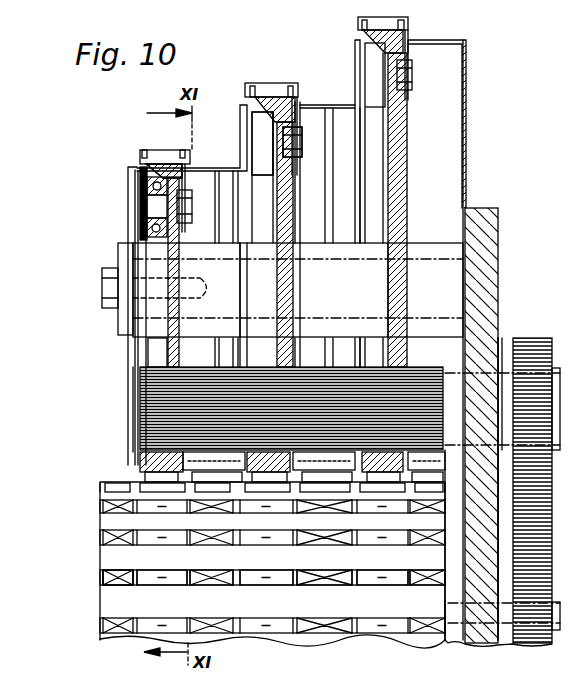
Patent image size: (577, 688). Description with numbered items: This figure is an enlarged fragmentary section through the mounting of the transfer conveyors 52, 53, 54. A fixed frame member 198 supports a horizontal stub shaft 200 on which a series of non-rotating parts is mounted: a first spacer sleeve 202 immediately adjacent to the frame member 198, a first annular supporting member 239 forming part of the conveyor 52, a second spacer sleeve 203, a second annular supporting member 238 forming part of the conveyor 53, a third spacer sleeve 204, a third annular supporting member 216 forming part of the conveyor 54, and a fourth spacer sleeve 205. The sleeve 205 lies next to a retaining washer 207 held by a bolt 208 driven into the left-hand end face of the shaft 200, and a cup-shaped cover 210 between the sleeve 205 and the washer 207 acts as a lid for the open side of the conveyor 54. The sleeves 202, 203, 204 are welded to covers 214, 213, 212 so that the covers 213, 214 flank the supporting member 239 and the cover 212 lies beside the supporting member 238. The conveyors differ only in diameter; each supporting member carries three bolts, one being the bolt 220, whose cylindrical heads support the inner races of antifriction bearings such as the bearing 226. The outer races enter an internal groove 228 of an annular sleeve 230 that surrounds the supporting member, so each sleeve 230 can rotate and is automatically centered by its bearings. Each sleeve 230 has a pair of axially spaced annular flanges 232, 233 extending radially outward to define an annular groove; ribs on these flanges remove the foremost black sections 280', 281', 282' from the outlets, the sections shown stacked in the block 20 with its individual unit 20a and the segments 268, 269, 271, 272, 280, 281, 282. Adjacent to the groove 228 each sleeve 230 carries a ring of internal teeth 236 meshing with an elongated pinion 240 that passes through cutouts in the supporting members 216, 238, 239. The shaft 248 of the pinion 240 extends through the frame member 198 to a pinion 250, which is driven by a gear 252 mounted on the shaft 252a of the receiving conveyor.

The stack of coil assemblies 20 is at (107, 523).
The coil unit 20a is at (102, 578).
The transfer conveyor 52 is at (350, 40).
The transfer conveyor 53 is at (312, 70).
The transfer conveyor 54 is at (216, 152).
The fixed frame member 198 is at (490, 256).
The horizontal stub shaft 200 is at (400, 285).
The first spacer sleeve 202 is at (443, 325).
The second spacer sleeve 203 is at (350, 316).
The third spacer sleeve 204 is at (246, 316).
The fourth spacer sleeve 205 is at (165, 324).
The retaining washer 207 is at (123, 252).
The bolt 208 is at (103, 289).
The cup-shaped cover 210 is at (130, 181).
The cover 212 is at (236, 200).
The cover 213 is at (306, 106).
The cover 214 is at (467, 166).
The third annular supporting member 216 is at (152, 355).
The bolt 220 is at (157, 208).
The antifriction bearing 226 is at (145, 232).
The internal groove 228 is at (135, 453).
The annular sleeve 230 is at (404, 36).
The annular flange 232 is at (152, 142).
The annular flange 233 is at (177, 143).
The internal teeth 236 is at (404, 54).
The second annular supporting member 238 is at (297, 186).
The first annular supporting member 239 is at (408, 123).
The elongated pinion 240 is at (148, 414).
The shaft 248 is at (503, 380).
The pinion 250 is at (555, 340).
The gear 252 is at (532, 622).
The shaft 252a is at (458, 630).
The coil segment 268 is at (420, 585).
The coil segment 269 is at (118, 587).
The coil segment 271 is at (344, 586).
The coil segment 272 is at (226, 584).
The coil segment 280 is at (382, 596).
The foremost black section 280' is at (383, 15).
The coil segment 281 is at (266, 594).
The foremost black section 281' is at (266, 63).
The coil segment 282 is at (162, 594).
The foremost black section 282' is at (116, 117).